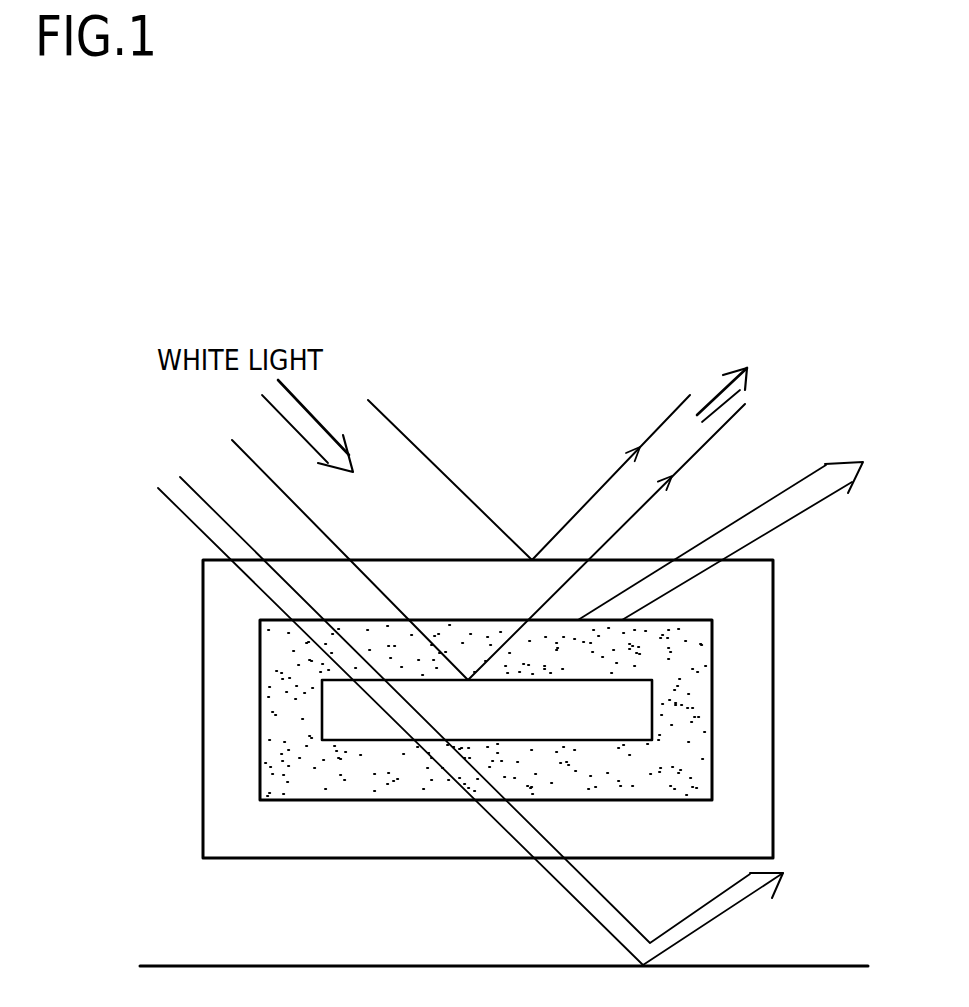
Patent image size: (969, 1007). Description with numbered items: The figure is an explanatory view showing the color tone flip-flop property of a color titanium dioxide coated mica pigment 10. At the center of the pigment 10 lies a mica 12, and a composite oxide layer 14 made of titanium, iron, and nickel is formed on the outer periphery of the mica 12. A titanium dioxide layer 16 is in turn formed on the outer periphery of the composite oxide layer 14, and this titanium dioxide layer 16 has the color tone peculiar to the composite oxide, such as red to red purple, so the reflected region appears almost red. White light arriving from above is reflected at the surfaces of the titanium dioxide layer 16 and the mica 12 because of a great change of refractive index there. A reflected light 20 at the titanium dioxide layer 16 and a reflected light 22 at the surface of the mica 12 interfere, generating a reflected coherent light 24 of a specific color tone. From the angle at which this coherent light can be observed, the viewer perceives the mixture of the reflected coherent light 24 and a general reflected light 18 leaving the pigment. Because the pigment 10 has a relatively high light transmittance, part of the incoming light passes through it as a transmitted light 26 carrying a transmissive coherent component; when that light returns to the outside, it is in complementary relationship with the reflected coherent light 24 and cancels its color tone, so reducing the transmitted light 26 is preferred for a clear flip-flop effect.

The pigment 10 is at (473, 679).
The mica 12 is at (647, 697).
The composite oxide layer 14 is at (700, 733).
The titanium dioxide layer 16 is at (757, 757).
The general reflected light 18 is at (783, 521).
The reflected light at the titanium dioxide layer 20 is at (607, 480).
The reflected light at the surface of the mica 22 is at (560, 590).
The reflected coherent light 24 is at (742, 398).
The transmitted light 26 is at (560, 887).